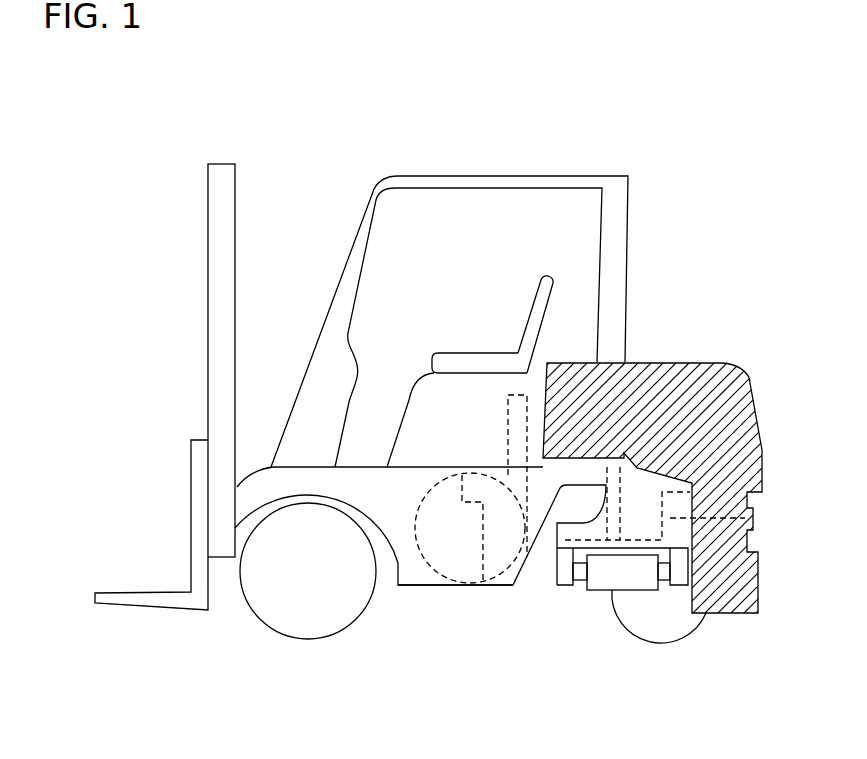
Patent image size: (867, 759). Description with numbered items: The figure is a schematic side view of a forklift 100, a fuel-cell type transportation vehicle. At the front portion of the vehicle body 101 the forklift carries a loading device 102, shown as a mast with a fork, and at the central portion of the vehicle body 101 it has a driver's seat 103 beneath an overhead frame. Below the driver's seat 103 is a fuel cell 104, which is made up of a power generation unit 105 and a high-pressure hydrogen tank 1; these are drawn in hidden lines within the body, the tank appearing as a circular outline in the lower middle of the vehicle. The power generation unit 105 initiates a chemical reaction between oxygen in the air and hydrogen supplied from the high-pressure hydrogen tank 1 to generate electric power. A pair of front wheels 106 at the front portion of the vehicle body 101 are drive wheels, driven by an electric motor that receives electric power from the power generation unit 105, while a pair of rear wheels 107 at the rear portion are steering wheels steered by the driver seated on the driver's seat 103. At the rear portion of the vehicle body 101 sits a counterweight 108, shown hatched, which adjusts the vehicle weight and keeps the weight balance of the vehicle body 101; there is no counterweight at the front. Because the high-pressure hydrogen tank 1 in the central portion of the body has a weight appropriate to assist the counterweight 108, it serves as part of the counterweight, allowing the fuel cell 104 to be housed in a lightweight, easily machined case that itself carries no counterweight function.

The forklift 100 is at (583, 150).
The vehicle body 101 is at (632, 257).
The loading device 102 is at (153, 592).
The driver's seat 103 is at (498, 348).
The fuel cell 104 is at (496, 602).
The power generation unit 105 is at (517, 562).
The high-pressure hydrogen tank 1 is at (437, 567).
The front wheels 106 is at (313, 640).
The rear wheels 107 is at (678, 642).
The counterweight 108 is at (668, 363).